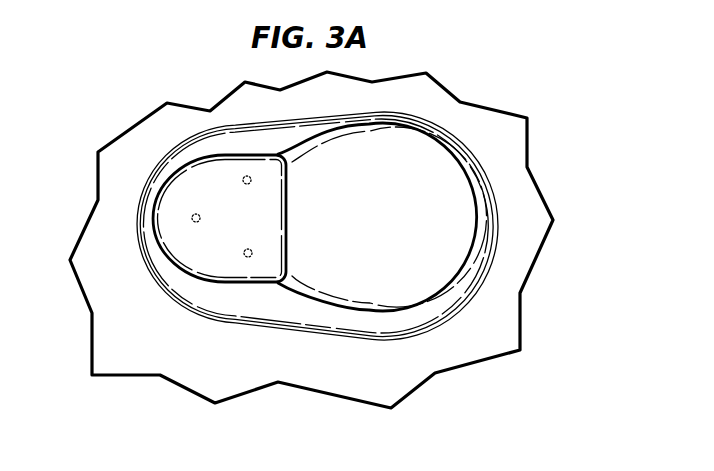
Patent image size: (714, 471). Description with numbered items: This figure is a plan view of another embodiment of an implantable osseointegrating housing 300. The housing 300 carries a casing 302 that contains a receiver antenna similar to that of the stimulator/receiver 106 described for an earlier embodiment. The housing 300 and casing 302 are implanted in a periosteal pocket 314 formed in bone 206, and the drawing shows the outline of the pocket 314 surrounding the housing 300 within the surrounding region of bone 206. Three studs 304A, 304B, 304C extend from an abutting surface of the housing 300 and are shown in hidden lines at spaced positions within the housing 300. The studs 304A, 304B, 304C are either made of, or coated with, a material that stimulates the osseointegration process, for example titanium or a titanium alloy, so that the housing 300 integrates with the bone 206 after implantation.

The stimulator/receiver 106 is at (527, 86).
The bone 206 is at (103, 348).
The implantable osseointegrating housing 300 is at (168, 259).
The casing 302 is at (310, 295).
The stud 304A is at (242, 178).
The stud 304B is at (190, 217).
The stud 304C is at (246, 252).
The periosteal pocket 314 is at (418, 128).